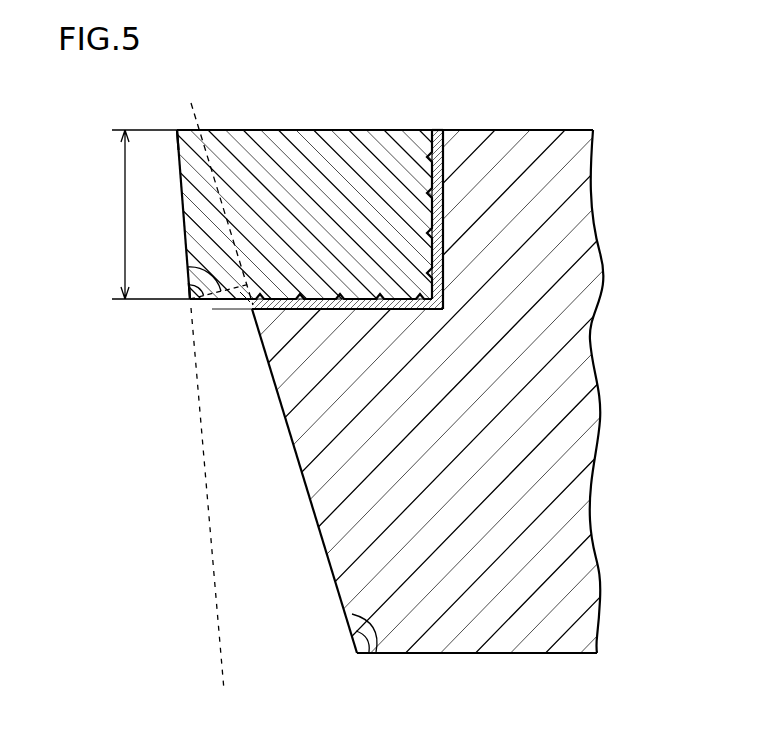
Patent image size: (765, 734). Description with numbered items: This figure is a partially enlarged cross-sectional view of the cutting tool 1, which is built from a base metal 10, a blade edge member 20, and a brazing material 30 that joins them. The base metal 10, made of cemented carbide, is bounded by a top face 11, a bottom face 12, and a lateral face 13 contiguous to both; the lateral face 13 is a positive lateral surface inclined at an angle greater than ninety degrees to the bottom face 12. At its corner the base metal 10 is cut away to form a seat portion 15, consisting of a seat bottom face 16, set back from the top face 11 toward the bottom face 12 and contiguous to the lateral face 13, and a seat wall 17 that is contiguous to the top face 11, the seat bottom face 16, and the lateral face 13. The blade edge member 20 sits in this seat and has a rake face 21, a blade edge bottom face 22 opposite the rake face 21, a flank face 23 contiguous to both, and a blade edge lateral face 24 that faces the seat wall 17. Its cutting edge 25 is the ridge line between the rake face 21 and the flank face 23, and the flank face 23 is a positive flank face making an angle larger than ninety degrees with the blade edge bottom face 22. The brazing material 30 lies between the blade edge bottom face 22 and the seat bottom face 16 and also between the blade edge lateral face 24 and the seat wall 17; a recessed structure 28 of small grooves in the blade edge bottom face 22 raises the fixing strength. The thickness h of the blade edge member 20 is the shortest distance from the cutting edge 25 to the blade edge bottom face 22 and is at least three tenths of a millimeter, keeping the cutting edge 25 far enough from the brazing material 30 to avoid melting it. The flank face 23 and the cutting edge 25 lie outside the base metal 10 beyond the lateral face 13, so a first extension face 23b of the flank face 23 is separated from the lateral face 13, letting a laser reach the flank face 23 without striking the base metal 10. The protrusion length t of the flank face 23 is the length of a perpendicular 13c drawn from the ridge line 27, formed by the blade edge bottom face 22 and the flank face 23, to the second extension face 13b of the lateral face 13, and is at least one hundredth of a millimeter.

The cutting tool 1 is at (382, 380).
The base metal 10 is at (382, 389).
The top face 11 is at (510, 130).
The bottom face 12 is at (490, 655).
The lateral face 13 is at (331, 564).
The second extension face 13b is at (197, 116).
The perpendicular 13c is at (246, 292).
The seat portion 15 is at (462, 239).
The seat bottom face 16 is at (377, 310).
The seat wall 17 is at (442, 273).
The blade edge member 20 is at (326, 387).
The rake face 21 is at (358, 130).
The blade edge bottom face 22 is at (322, 311).
The flank face 23 is at (181, 182).
The first extension face 23b is at (213, 560).
The blade edge lateral face 24 is at (435, 174).
The cutting edge 25 is at (177, 129).
The ridge line 27 is at (189, 301).
The recessed structure 28 is at (433, 232).
The brazing material 30 is at (437, 148).
The thickness h is at (147, 214).
The protrusion length t is at (221, 305).